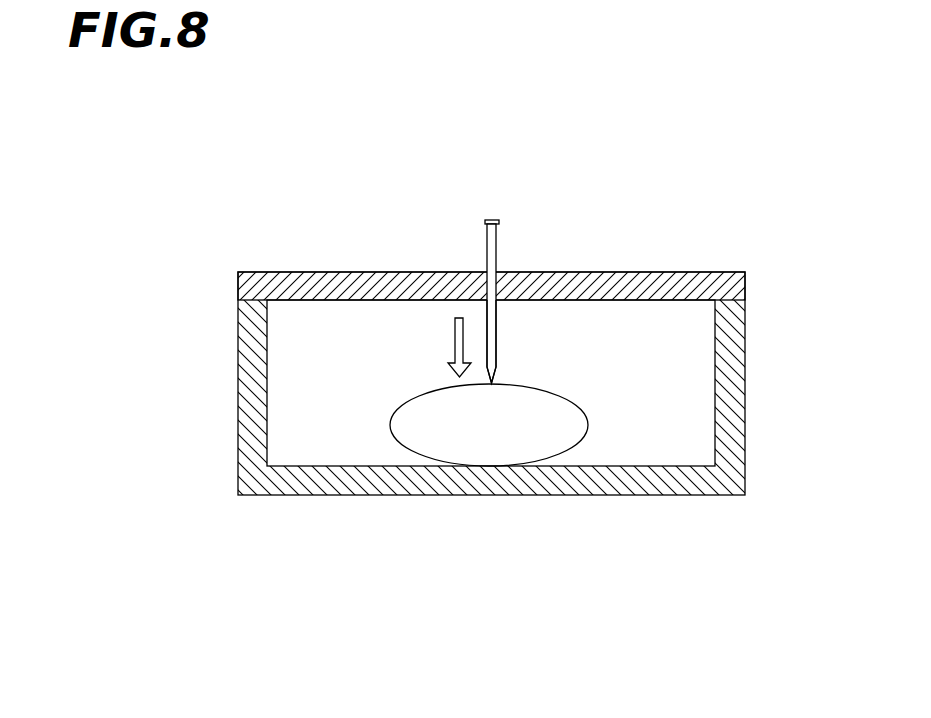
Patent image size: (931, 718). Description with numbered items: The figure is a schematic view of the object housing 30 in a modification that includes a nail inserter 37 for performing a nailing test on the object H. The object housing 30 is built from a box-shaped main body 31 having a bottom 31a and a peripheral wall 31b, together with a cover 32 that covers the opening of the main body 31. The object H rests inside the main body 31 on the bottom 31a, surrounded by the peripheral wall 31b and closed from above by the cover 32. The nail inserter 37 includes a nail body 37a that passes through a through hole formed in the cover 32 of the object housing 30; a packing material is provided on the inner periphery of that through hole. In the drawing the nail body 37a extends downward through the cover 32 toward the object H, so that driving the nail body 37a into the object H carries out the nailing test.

The object housing 30 is at (684, 269).
The main body 31 is at (482, 428).
The bottom 31a is at (480, 478).
The peripheral wall 31b is at (235, 402).
The cover 32 is at (300, 282).
The nail inserter 37 is at (487, 243).
The nail body 37a is at (493, 313).
The object H is at (563, 408).